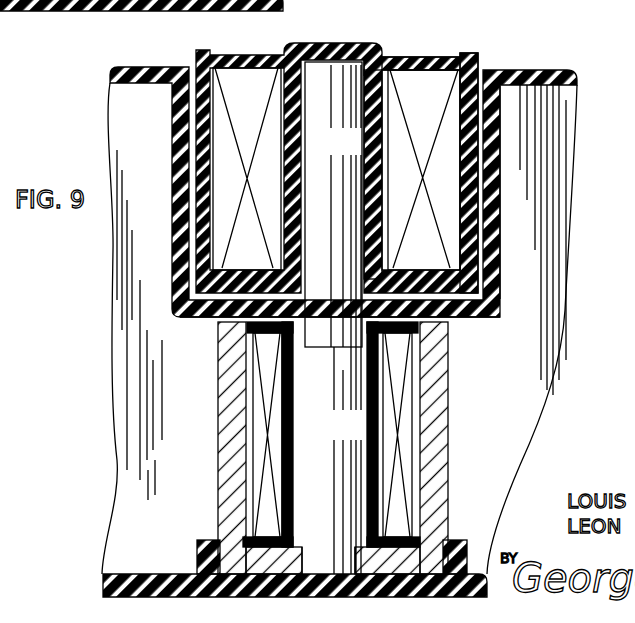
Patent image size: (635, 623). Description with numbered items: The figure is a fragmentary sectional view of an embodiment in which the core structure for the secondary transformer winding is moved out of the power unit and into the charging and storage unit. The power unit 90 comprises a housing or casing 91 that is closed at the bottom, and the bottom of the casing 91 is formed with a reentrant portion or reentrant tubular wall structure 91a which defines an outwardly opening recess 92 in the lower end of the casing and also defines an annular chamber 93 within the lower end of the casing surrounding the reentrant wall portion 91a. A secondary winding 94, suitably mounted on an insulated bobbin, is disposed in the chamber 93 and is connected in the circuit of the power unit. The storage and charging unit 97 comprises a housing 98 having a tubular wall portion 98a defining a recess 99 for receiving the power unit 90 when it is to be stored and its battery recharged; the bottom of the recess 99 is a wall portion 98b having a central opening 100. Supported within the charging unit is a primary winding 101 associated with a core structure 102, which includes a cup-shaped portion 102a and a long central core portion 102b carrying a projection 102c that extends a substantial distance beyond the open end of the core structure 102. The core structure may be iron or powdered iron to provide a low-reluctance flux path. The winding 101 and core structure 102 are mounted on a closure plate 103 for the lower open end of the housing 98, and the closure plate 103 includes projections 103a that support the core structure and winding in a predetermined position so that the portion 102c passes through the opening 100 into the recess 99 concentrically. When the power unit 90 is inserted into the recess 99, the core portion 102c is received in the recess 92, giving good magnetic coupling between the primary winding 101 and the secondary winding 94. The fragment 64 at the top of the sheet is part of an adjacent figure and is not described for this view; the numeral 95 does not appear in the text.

The housing bottom wall 64 is at (30, 11).
The power unit 90 is at (479, 52).
The housing or casing 91 is at (479, 62).
The reentrant tubular wall structure 91a is at (376, 56).
The outwardly opening recess 92 is at (320, 62).
The annular chamber 93 is at (455, 162).
The secondary winding 94 is at (444, 197).
The core sleeve 95 is at (388, 229).
The storage and charging unit 97 is at (565, 69).
The housing 98 is at (577, 82).
The tubular wall portion 98a is at (498, 138).
The wall portion 98b is at (210, 318).
The recess 99 is at (188, 78).
The central opening 100 is at (333, 217).
The primary winding 101 is at (411, 360).
The core structure 102 is at (441, 441).
The cup-shaped portion 102a is at (444, 478).
The central core portion 102b is at (331, 460).
The projection 102c is at (337, 206).
The closure plate 103 is at (120, 578).
The projections 103a is at (459, 542).